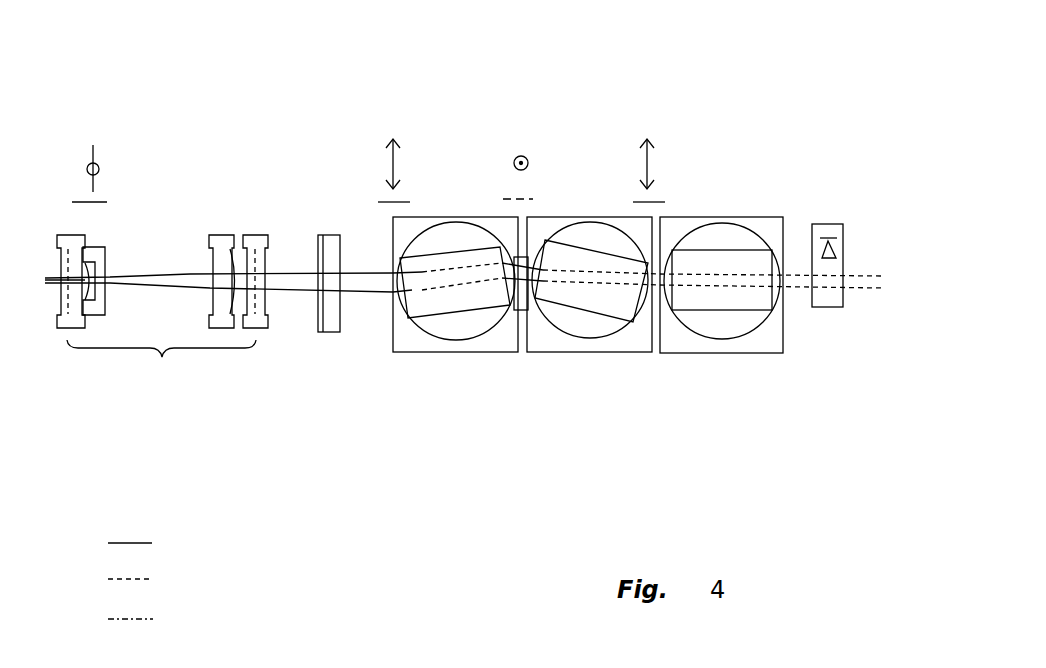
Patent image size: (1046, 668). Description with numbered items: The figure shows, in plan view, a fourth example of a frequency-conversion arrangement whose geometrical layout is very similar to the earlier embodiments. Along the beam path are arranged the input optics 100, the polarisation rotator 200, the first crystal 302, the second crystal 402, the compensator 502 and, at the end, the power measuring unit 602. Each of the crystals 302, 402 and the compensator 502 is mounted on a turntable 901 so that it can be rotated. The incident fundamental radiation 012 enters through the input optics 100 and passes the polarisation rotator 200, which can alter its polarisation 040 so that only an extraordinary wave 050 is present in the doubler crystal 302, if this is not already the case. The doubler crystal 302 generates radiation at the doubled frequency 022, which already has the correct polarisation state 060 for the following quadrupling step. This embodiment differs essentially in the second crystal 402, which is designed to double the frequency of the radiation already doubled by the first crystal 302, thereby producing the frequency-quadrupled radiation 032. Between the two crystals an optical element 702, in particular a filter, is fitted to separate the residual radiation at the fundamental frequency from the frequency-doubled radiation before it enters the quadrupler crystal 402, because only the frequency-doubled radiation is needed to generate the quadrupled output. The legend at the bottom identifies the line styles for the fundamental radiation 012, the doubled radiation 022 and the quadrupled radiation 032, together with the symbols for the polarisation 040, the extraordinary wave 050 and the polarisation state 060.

The input optics 100 is at (162, 362).
The polarisation rotator 200 is at (328, 310).
The first crystal 302 is at (450, 300).
The second crystal 402 is at (593, 302).
The compensator 502 is at (720, 300).
The power measuring unit 602 is at (827, 297).
The optical element 702 is at (527, 340).
The turntable 901 is at (406, 333).
The fundamental radiation 012 is at (158, 546).
The radiation at the doubled frequency 022 is at (158, 583).
The frequency-quadrupled radiation 032 is at (158, 623).
The polarisation 040 is at (275, 527).
The extraordinary wave 050 is at (393, 527).
The polarisation state 060 is at (460, 392).